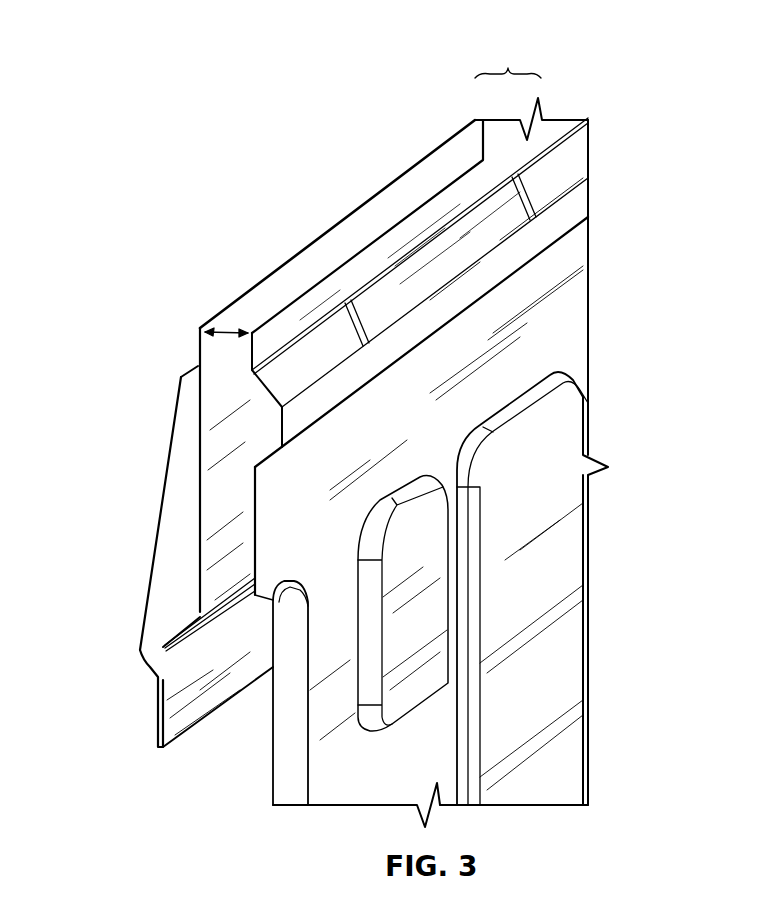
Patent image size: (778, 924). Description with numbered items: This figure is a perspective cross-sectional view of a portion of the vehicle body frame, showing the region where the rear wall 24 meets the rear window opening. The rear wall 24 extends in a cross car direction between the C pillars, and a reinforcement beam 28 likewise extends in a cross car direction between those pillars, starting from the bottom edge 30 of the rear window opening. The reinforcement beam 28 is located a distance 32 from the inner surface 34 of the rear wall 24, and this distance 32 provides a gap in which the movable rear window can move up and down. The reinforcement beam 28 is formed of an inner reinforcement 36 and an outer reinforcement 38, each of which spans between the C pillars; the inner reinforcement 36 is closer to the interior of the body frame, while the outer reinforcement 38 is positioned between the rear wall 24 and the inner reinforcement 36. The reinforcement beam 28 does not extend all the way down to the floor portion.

The rear wall 24 is at (568, 536).
The reinforcement beam 28 is at (118, 632).
The bottom edge 30 is at (333, 228).
The distance 32 is at (226, 331).
The inner surface 34 is at (181, 386).
The inner reinforcement 36 is at (157, 532).
The outer reinforcement 38 is at (230, 453).